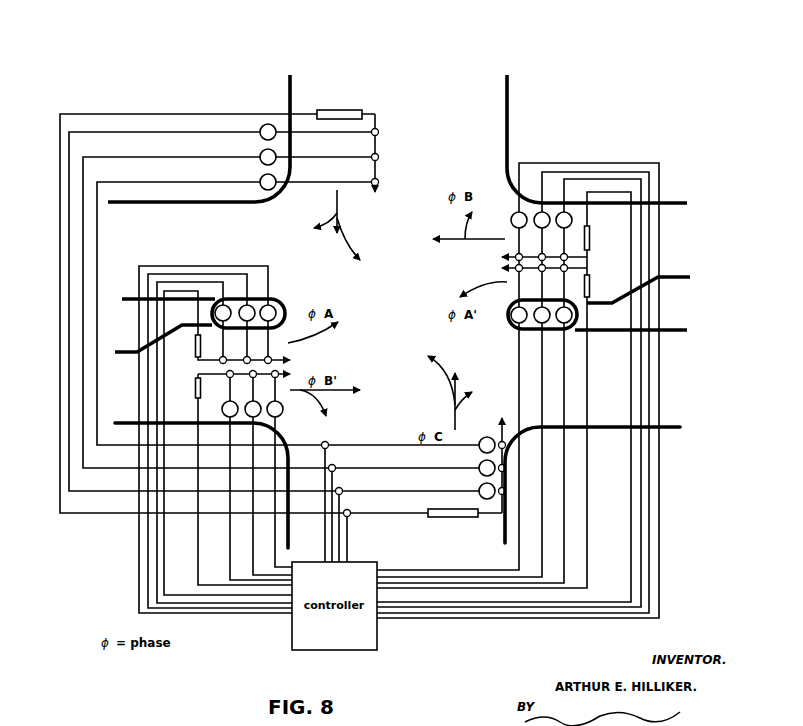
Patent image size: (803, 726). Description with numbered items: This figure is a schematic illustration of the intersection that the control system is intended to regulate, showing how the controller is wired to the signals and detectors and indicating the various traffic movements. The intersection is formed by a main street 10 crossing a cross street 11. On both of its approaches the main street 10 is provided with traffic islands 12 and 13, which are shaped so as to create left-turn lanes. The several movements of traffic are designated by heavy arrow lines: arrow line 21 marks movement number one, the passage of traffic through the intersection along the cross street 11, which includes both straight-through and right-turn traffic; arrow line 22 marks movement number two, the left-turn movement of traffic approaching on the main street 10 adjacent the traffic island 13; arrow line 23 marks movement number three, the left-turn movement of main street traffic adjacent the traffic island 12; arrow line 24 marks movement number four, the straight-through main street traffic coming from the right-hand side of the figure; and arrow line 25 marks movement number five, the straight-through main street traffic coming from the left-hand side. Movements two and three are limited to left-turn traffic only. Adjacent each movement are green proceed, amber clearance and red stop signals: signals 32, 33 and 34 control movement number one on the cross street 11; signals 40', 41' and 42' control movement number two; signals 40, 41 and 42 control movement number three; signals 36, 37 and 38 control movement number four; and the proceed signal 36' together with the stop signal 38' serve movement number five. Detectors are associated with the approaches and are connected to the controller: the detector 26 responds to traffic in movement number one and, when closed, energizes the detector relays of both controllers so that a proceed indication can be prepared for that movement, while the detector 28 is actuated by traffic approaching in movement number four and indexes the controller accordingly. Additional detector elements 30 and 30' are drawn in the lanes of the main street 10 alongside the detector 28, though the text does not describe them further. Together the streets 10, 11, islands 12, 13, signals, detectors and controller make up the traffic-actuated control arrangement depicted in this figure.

The main street 10 is at (125, 256).
The cross street 11 is at (415, 100).
The traffic island 12 is at (131, 357).
The traffic island 13 is at (620, 336).
The arrow line 21 is at (346, 221).
The arrow line 22 is at (486, 283).
The arrow line 23 is at (324, 334).
The arrow line 24 is at (462, 239).
The arrow line 25 is at (333, 392).
The detector 26 is at (333, 111).
The detector 28 is at (196, 394).
The detector resistor 30 is at (182, 349).
The detector resistor 30' is at (605, 286).
The traffic signal 32 is at (260, 130).
The traffic signal 33 is at (260, 155).
The traffic signal 34 is at (260, 180).
The traffic signal 36 is at (570, 233).
The proceed signal 36' is at (219, 399).
The traffic signal 37 is at (250, 401).
The traffic signal 38 is at (524, 233).
The traffic signal 38' is at (267, 399).
The traffic signal 40 is at (217, 328).
The traffic signal 40' is at (584, 332).
The traffic signal 41 is at (240, 328).
The traffic signal 41' is at (550, 332).
The traffic signal 42 is at (262, 328).
The traffic signal 42' is at (526, 332).